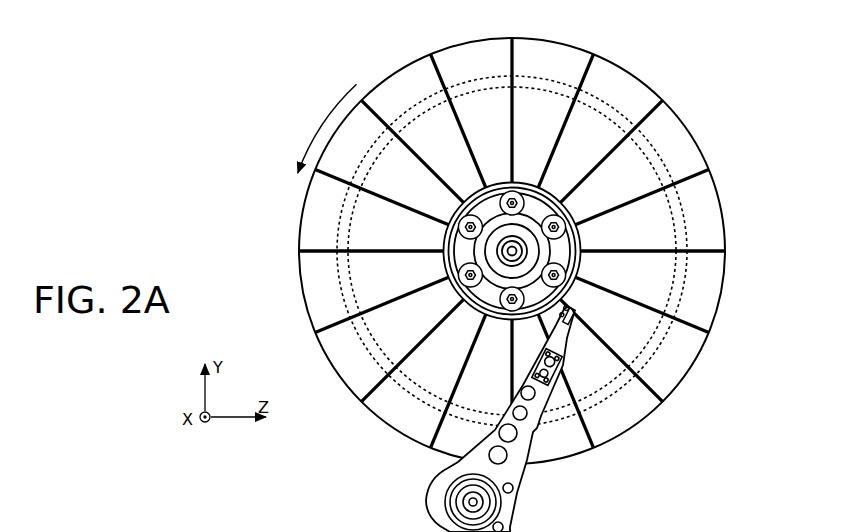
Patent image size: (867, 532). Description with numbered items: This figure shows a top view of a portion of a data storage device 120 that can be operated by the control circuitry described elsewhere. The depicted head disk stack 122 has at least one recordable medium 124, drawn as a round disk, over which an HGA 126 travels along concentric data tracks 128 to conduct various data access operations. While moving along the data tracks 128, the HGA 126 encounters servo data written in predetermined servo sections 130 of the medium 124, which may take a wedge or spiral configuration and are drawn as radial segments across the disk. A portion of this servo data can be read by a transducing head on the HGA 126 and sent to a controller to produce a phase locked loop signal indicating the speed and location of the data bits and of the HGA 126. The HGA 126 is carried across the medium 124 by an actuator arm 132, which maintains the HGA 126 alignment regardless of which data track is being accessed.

The data storage device 120 is at (225, 100).
The head disk stack 122 is at (622, 447).
The recordable medium 124 is at (693, 365).
The HGA 126 is at (574, 314).
The data tracks 128 is at (342, 301).
The servo sections 130 is at (645, 123).
The actuator arm 132 is at (475, 438).